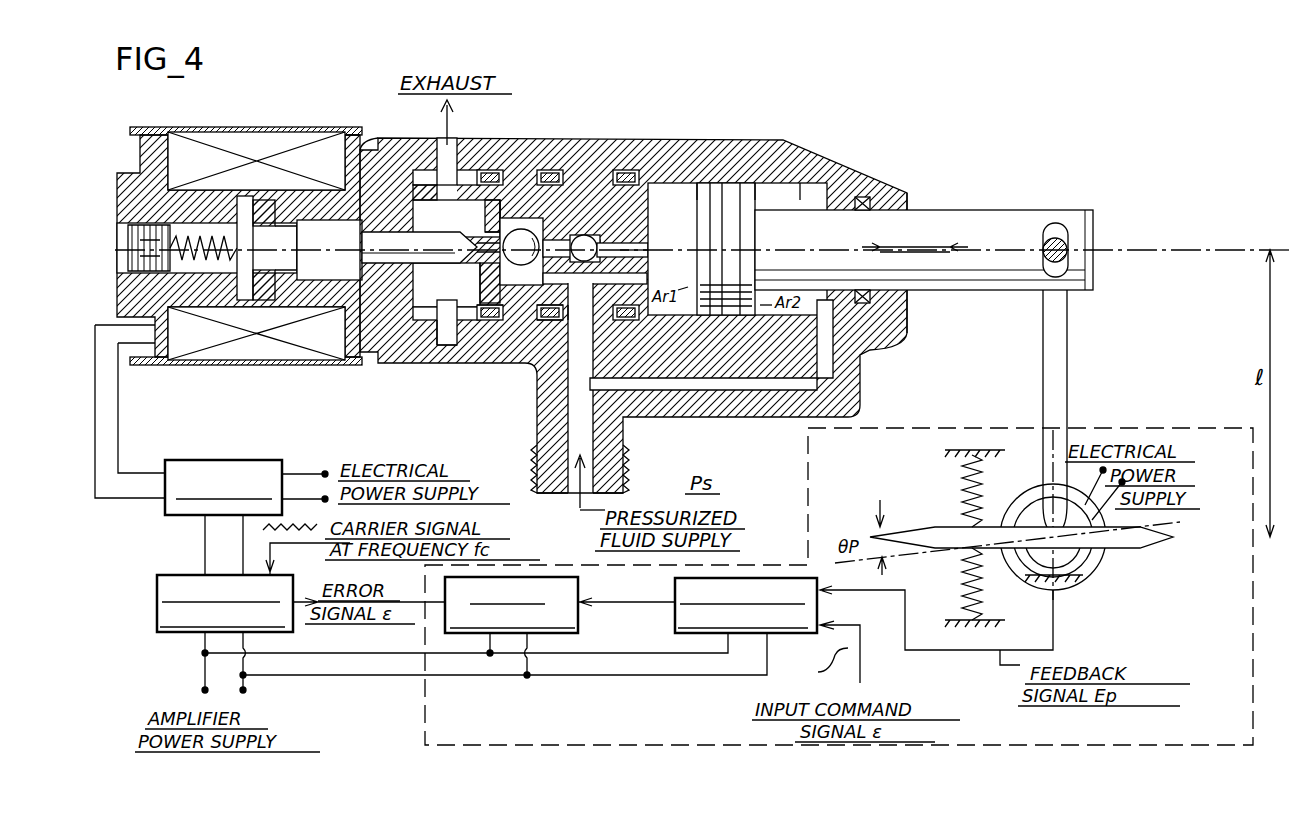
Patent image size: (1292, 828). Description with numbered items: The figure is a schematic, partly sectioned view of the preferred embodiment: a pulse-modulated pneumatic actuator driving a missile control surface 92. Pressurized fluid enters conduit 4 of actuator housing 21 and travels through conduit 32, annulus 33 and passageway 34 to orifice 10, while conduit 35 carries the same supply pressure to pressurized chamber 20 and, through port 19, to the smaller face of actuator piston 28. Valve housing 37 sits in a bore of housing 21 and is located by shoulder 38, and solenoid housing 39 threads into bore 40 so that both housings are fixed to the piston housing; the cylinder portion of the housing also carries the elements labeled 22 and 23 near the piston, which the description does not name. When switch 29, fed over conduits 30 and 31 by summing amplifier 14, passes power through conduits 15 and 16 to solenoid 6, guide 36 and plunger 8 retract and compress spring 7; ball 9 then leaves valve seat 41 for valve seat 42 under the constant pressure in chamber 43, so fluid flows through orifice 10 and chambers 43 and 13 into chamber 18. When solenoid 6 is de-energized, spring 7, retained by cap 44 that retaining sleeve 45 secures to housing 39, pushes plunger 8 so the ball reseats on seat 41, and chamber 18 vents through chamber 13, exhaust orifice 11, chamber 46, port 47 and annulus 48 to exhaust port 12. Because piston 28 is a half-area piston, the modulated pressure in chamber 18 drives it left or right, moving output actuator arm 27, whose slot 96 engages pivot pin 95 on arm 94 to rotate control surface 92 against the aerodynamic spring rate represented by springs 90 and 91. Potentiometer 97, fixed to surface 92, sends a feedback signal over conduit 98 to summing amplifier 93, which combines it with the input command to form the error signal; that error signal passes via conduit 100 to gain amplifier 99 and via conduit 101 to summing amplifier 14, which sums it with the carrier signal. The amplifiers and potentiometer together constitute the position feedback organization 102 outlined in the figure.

The conduit 4 is at (605, 470).
The solenoid 6 is at (198, 362).
The return spring 7 is at (130, 252).
The plunger 8 is at (413, 242).
The ball valve 9 is at (485, 222).
The orifice 10 is at (590, 238).
The exhaust orifice 11 is at (465, 283).
The exhaust port 12 is at (440, 350).
The chamber 13 is at (584, 236).
The summing amplifier 14 is at (170, 635).
The electrical conduit 15 is at (122, 410).
The electrical conduit 16 is at (85, 410).
The chamber 18 is at (705, 195).
The port 19 is at (840, 385).
The pressurized chamber 20 is at (832, 193).
The actuator housing 21 is at (870, 330).
The cylinder bore 22 is at (758, 175).
The cylinder chamber 23 is at (803, 190).
The output actuator arm 27 is at (1006, 210).
The actuator piston 28 is at (722, 200).
The electrical switch 29 is at (222, 458).
The conduit 30 is at (200, 538).
The conduit 31 is at (243, 540).
The conduit 32 is at (537, 440).
The annulus 33 is at (535, 395).
The passageway 34 is at (650, 250).
The conduit 35 is at (700, 392).
The guide 36 is at (345, 248).
The valve housing 37 is at (523, 232).
The shoulder 38 is at (678, 200).
The solenoid housing 39 is at (358, 135).
The bore 40 is at (478, 325).
The valve seat 41 is at (547, 280).
The valve seat 42 is at (490, 330).
The chamber 43 is at (520, 330).
The cap 44 is at (140, 150).
The retaining sleeve 45 is at (233, 362).
The chamber 46 is at (425, 335).
The port 47 is at (455, 178).
The annulus 48 is at (425, 140).
The spring 90 is at (962, 486).
The spring 91 is at (962, 580).
The control surface 92 is at (1130, 548).
The summing amplifier 93 is at (780, 633).
The arm 94 is at (1070, 333).
The pivot pin 95 is at (1068, 245).
The slot 96 is at (1055, 223).
The feedback potentiometer 97 is at (1097, 572).
The conduit 98 is at (1055, 640).
The gain amplifier 99 is at (578, 620).
The conduit 100 is at (638, 598).
The conduit 101 is at (298, 595).
The position feedback organization 102 is at (1127, 420).